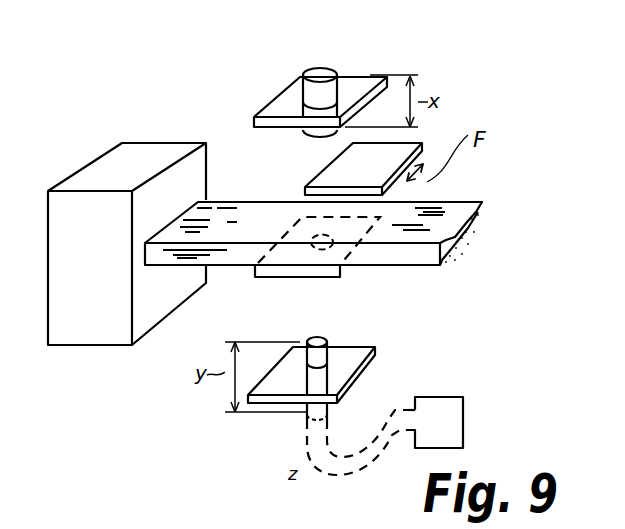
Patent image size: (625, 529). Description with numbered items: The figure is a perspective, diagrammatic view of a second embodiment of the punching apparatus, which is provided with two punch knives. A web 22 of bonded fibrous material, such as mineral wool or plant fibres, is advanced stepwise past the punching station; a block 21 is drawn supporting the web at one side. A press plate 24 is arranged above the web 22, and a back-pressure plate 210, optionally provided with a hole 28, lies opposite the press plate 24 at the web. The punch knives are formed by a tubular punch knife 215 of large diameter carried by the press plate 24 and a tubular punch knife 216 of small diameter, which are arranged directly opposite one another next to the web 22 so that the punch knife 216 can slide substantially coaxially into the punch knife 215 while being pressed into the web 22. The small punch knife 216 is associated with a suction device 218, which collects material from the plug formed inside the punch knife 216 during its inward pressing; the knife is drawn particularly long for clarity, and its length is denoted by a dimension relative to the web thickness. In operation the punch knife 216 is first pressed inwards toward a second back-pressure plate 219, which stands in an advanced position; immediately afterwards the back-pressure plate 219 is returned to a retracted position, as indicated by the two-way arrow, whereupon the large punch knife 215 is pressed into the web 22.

The support block 21 is at (100, 177).
The web 22 is at (458, 210).
The press plate 24 is at (360, 87).
The hole 28 is at (333, 242).
The back-pressure plate 210 is at (318, 270).
The tubular punch knife of large diameter 215 is at (312, 135).
The tubular punch knife of small diameter 216 is at (327, 360).
The suction device 218 is at (437, 413).
The second back-pressure plate 219 is at (383, 157).